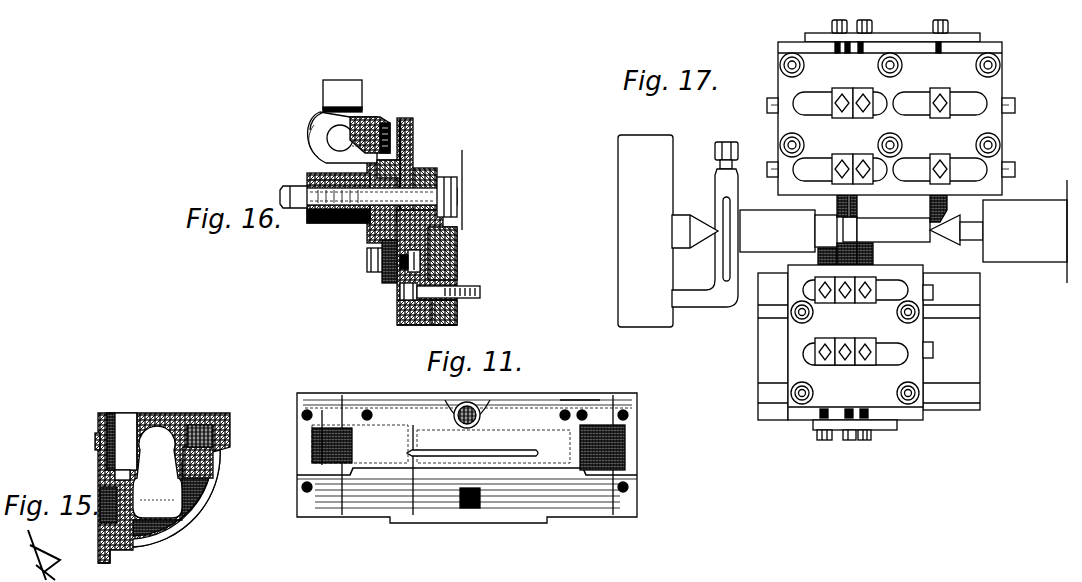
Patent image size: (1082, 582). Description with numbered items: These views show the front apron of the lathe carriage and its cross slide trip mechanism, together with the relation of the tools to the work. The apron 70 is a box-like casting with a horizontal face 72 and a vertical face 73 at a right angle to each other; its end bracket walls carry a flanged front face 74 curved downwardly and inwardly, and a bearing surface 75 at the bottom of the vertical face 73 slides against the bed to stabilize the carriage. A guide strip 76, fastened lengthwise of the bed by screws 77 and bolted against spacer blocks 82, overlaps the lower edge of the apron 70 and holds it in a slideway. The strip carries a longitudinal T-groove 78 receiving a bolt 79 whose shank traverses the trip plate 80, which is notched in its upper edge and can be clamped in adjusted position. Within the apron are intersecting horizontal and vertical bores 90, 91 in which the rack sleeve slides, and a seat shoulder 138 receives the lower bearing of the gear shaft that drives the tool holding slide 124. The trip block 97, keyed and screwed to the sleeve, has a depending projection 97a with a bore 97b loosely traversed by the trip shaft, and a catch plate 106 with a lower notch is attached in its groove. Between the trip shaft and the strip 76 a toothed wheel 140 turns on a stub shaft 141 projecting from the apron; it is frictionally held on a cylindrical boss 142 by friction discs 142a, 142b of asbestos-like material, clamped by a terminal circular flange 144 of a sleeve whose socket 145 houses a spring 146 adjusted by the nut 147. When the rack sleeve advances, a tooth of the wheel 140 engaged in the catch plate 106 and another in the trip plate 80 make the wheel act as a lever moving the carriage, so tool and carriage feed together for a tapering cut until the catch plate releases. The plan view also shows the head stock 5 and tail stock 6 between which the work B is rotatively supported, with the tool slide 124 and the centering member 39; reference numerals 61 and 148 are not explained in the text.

In FIG. 17, the head stock 5 is at (612, 206).
In FIG. 17, the tail stock 6 is at (1032, 202).
In FIG. 17, the center 39 is at (703, 224).
In FIG. 17, the work piece B is at (777, 231).
In FIG. 17, the tool holding slide 124 is at (973, 334).
In FIG. 16, the screw 61 is at (373, 260).
In FIG. 16, the apron 70 is at (446, 277).
In FIG. 15, the apron 70 is at (217, 473).
In FIG. 11, the apron 70 is at (637, 440).
In FIG. 15, the horizontal face 72 is at (140, 413).
In FIG. 11, the horizontal face 72 is at (327, 423).
In FIG. 15, the vertical face 73 is at (97, 458).
In FIG. 11, the vertical face 73 is at (588, 397).
In FIG. 15, the flanged front face 74 is at (193, 513).
In FIG. 15, the bearing surface 75 is at (97, 550).
In FIG. 16, the guide strip 76 is at (415, 325).
In FIG. 16, the screws 77 is at (480, 291).
In FIG. 16, the T-groove 78 is at (418, 267).
In FIG. 16, the bolt 79 is at (447, 247).
In FIG. 16, the trip plate 80 is at (390, 280).
In FIG. 16, the spacer blocks 82 is at (457, 312).
In FIG. 15, the horizontal bore 90 is at (157, 472).
In FIG. 15, the vertical bore 91 is at (115, 413).
In FIG. 11, the vertical bore 91 is at (480, 407).
In FIG. 16, the trip block 97 is at (338, 85).
In FIG. 16, the depending projection 97a is at (318, 132).
In FIG. 16, the bore 97b is at (330, 128).
In FIG. 16, the catch plate 106 is at (388, 130).
In FIG. 15, the seat shoulder 138 is at (157, 491).
In FIG. 11, the seat shoulder 138 is at (472, 446).
In FIG. 16, the toothed wheel 140 is at (400, 170).
In FIG. 16, the stub shaft 141 is at (440, 197).
In FIG. 16, the cylindrical boss 142 is at (430, 190).
In FIG. 16, the friction disc 142a is at (403, 160).
In FIG. 16, the friction disc 142b is at (387, 237).
In FIG. 16, the terminal circular flange 144 is at (373, 122).
In FIG. 16, the socket 145 is at (324, 198).
In FIG. 16, the spring 146 is at (308, 220).
In FIG. 16, the nut 147 is at (293, 193).
In FIG. 16, the threaded portion 148 is at (327, 225).